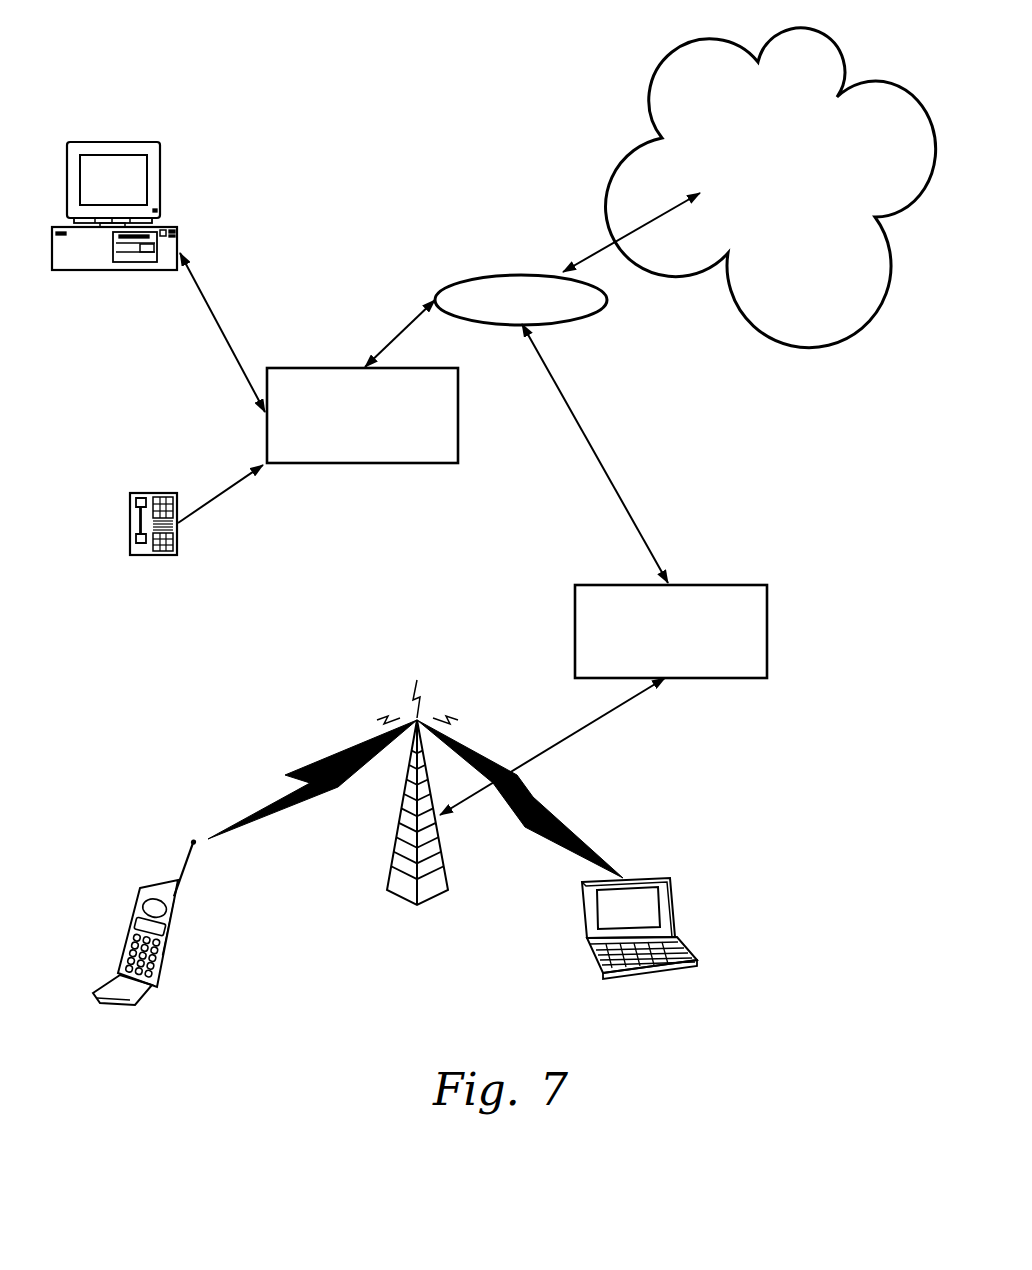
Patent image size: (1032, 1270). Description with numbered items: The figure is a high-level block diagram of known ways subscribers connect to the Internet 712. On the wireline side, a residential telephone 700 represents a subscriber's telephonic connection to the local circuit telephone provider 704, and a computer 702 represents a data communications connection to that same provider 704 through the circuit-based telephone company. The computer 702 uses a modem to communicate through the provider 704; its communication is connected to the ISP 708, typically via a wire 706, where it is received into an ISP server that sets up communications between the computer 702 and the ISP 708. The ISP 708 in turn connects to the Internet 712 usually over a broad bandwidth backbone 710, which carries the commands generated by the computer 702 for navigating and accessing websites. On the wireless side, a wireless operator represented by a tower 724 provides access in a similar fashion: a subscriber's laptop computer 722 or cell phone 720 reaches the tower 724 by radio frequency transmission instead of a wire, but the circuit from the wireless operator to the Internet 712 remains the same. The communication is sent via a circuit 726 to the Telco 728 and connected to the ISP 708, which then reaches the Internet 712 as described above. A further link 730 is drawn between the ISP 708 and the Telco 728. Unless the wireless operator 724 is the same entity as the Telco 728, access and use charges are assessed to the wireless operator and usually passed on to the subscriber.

The telephone 700 is at (162, 493).
The computer 702 is at (127, 142).
The local circuit telephone provider 704 is at (440, 463).
The wire 706 is at (388, 333).
The ISP 708 is at (472, 276).
The backbone 710 is at (584, 266).
The Internet 712 is at (672, 53).
The cell phone 720 is at (142, 1000).
The laptop computer 722 is at (660, 878).
The tower 724 is at (390, 871).
The circuit 726 is at (548, 748).
The Telco 728 is at (735, 585).
The connection between ISP and wireline switch telephone company 730 is at (596, 452).